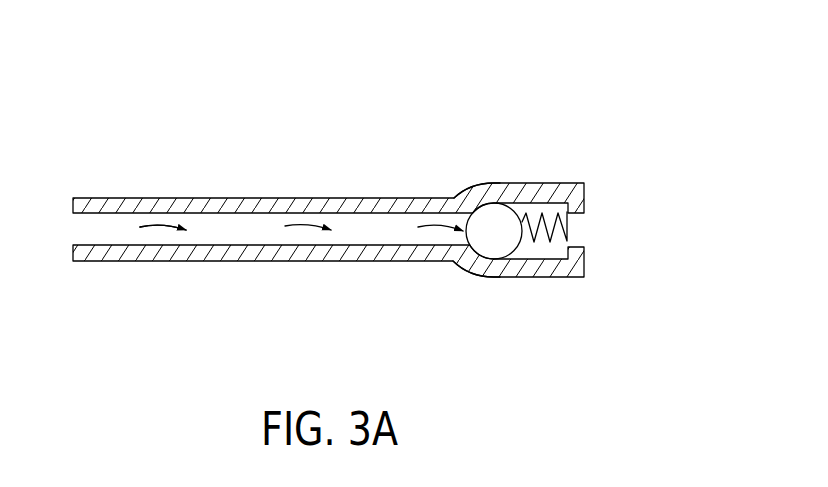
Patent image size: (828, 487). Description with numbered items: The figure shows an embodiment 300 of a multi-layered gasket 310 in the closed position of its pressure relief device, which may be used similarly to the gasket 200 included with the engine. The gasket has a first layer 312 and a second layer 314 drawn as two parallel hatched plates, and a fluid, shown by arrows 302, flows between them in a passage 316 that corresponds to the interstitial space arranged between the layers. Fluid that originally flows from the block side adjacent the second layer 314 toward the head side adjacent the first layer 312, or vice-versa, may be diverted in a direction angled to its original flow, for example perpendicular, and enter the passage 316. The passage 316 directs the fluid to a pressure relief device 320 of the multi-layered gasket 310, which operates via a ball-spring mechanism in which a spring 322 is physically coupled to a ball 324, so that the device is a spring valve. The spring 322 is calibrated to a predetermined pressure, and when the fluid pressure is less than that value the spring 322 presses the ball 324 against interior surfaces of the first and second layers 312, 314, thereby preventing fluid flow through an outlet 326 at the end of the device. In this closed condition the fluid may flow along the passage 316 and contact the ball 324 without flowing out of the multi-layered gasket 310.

The embodiment 300 is at (585, 29).
The gasket 200 is at (537, 112).
The multi-layered gasket 310 is at (586, 181).
The first layer 312 is at (104, 198).
The second layer 314 is at (104, 262).
The passage 316 is at (398, 242).
The arrows 302 is at (162, 227).
The pressure relief device 320 is at (522, 261).
The spring 322 is at (542, 219).
The ball 324 is at (487, 207).
The outlet 326 is at (578, 229).